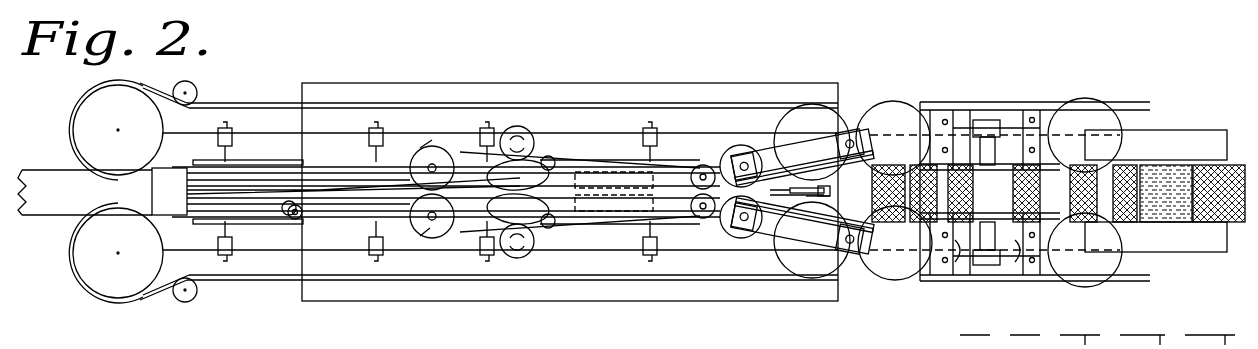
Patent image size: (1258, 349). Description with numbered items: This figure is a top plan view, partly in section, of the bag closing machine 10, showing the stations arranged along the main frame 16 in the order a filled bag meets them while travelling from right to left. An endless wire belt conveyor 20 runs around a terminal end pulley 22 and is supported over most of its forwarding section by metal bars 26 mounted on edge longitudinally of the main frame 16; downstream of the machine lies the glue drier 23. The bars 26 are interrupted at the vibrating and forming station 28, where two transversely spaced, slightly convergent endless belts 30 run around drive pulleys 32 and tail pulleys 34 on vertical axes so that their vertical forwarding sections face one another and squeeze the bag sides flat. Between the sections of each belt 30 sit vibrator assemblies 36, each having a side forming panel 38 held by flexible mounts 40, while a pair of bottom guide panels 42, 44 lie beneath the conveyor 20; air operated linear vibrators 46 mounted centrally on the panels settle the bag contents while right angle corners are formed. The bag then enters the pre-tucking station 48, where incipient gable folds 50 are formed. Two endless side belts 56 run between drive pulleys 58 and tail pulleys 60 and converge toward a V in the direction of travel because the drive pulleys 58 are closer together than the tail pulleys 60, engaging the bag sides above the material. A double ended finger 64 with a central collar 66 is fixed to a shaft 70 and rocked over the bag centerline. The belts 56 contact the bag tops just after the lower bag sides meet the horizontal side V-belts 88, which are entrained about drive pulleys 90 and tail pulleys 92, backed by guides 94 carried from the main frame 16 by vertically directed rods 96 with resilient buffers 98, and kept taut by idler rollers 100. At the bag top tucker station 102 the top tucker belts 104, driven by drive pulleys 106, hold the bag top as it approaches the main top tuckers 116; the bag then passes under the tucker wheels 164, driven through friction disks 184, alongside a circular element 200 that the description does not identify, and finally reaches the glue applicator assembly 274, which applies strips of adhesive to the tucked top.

The bag closing machine 10 is at (760, 316).
The main frame 16 is at (548, 305).
The endless wire belt conveyor 20 is at (1195, 175).
The terminal end pulley 22 is at (1240, 168).
The glue drier 23 is at (57, 213).
The metal bars 26 is at (1172, 175).
The vibrating and forming station 28 is at (985, 60).
The endless belts 30 is at (928, 100).
The drive pulleys 32 is at (905, 147).
The tail pulleys 34 is at (1100, 146).
The vibrator assemblies 36 is at (1000, 118).
The side forming panel 38 is at (1050, 195).
The flexible mounts 40 is at (952, 278).
The bottom guide panel 42 is at (890, 214).
The bottom guide panel 44 is at (1128, 170).
The air operated linear vibrators 46 is at (998, 193).
The pre-tucking station 48 is at (812, 62).
The incipient gable folds 50 is at (986, 193).
The endless side belts 56 is at (765, 138).
The drive pulleys 58 is at (718, 152).
The tail pulleys 60 is at (860, 305).
The double ended finger 64 is at (800, 190).
The collar 66 is at (831, 198).
The shaft 70 is at (830, 184).
The horizontal side V-belts 88 is at (325, 140).
The drive pulleys 90 is at (108, 139).
The tail pulleys 92 is at (808, 308).
The guides 94 is at (256, 162).
The vertically directed rods 96 is at (230, 126).
The resilient buffers 98 is at (218, 141).
The idler rollers 100 is at (198, 91).
The bag top tucker station 102 is at (616, 70).
The top tucker belts 104 is at (592, 208).
The drive pulleys 106 is at (432, 146).
The main top tuckers 116 is at (590, 160).
The tucker wheels 164 is at (520, 192).
The friction disks 184 is at (530, 130).
The wheel 200 is at (432, 192).
The glue applicator assembly 274 is at (282, 196).